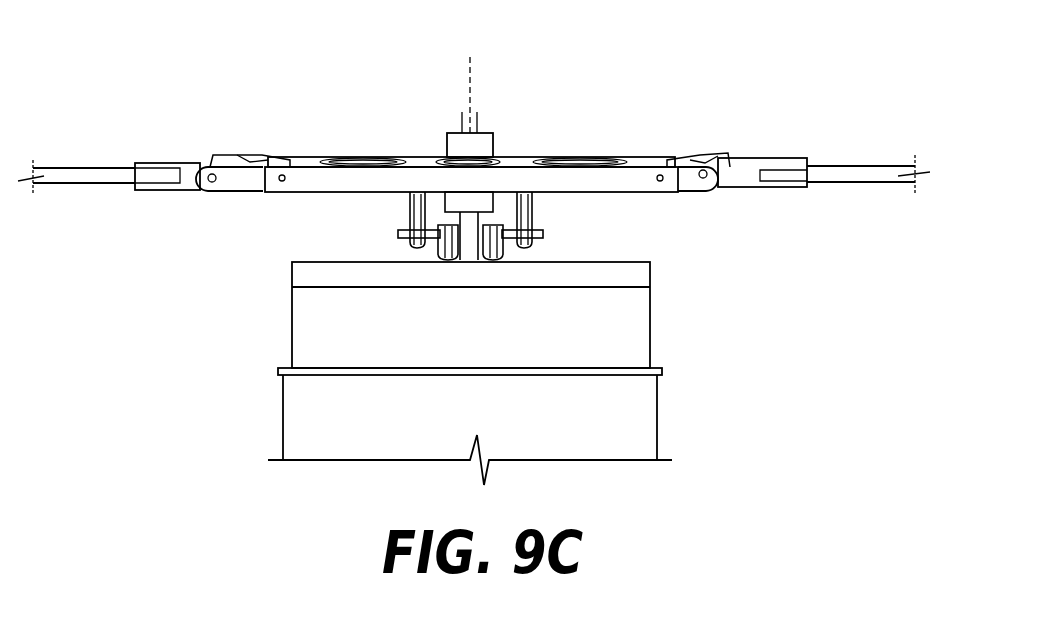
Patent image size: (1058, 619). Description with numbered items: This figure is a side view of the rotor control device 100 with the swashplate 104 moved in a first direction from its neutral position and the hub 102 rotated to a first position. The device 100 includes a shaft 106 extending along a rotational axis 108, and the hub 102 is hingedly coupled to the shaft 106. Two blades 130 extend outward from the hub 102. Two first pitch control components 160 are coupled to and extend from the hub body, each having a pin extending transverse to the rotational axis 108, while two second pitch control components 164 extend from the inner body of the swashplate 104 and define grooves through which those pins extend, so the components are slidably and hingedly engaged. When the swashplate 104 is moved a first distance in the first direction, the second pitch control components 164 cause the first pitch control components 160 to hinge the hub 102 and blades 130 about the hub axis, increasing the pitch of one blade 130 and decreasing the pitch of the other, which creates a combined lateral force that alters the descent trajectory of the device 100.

The rotor control device 100 is at (705, 50).
The hub 102 is at (580, 141).
The swashplate 104 is at (313, 272).
The shaft 106 is at (472, 220).
The rotational axis 108 is at (470, 102).
The blades 130 is at (88, 155).
The first pitch control components 160 is at (410, 215).
The second pitch control components 164 is at (438, 245).